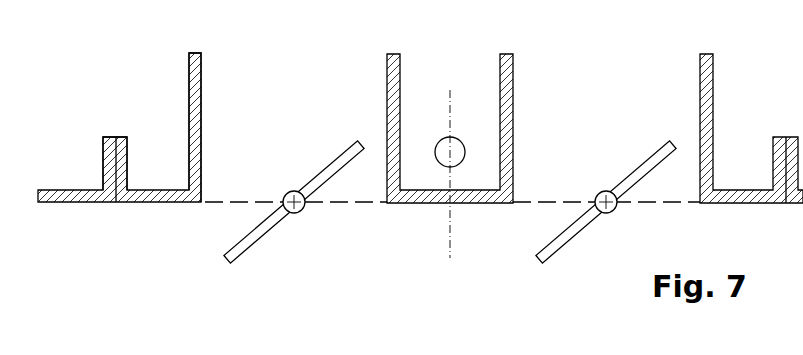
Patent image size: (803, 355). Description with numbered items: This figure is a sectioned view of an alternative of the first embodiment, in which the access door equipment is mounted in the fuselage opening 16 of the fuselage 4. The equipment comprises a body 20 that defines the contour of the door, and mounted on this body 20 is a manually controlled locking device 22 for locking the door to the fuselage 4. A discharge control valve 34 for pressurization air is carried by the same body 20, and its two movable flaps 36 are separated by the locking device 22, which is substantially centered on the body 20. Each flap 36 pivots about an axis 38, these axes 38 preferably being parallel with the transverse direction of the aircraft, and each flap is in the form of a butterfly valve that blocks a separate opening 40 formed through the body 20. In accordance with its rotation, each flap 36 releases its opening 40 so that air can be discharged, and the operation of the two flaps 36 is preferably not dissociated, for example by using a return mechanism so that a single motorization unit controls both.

The fuselage 4 is at (98, 206).
The fuselage opening 16 is at (118, 137).
The body 20 is at (202, 77).
The locking device 22 is at (441, 164).
The discharge control valve 34 is at (378, 252).
The movable flaps 36 is at (272, 232).
The axes 38 is at (287, 193).
The opening 40 is at (228, 204).